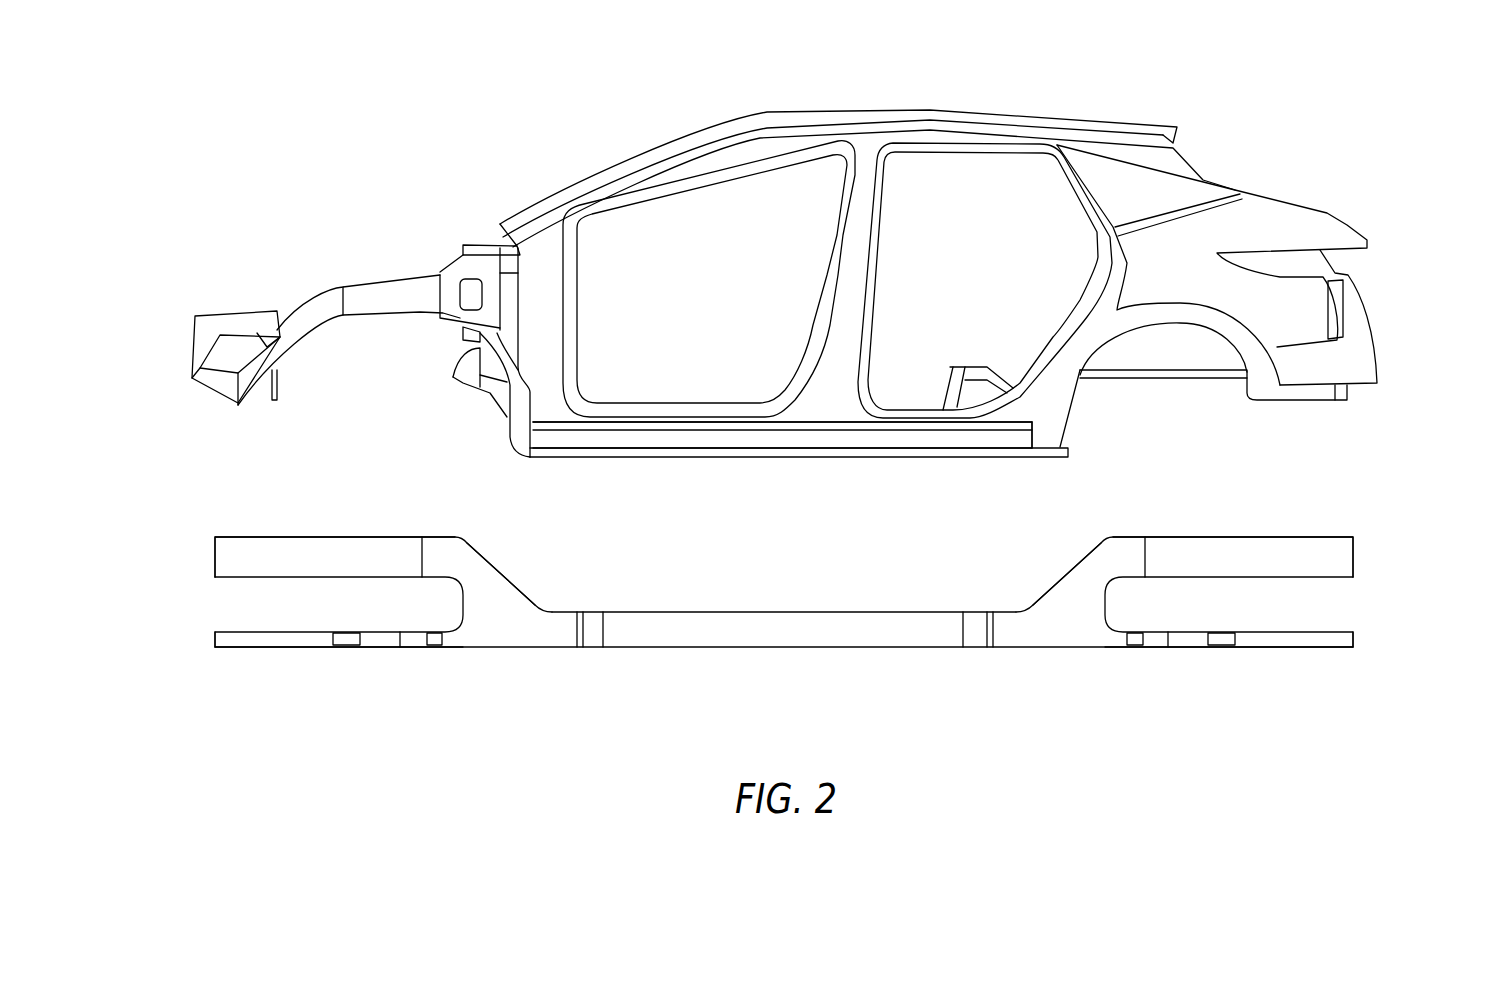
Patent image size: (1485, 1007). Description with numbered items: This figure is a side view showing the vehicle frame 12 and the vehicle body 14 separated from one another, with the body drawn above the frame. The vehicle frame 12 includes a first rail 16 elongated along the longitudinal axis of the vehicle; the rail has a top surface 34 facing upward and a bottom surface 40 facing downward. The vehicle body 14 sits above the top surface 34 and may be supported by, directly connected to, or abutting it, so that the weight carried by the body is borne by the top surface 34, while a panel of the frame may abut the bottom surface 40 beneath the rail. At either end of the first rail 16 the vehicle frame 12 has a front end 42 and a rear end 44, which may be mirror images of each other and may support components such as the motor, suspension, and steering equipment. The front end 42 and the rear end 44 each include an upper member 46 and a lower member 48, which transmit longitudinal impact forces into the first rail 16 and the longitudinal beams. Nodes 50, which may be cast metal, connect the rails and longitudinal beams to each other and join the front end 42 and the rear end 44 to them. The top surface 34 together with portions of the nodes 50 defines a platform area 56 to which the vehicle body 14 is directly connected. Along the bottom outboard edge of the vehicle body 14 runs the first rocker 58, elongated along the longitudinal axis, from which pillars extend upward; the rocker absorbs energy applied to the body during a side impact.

The vehicle frame 12 is at (1058, 713).
The vehicle body 14 is at (383, 140).
The first rail 16 is at (710, 640).
The top surface 34 is at (855, 610).
The bottom surface 40 is at (890, 650).
The front end 42 is at (179, 588).
The rear end 44 is at (1392, 588).
The upper member 46 is at (250, 535).
The lower member 48 is at (250, 650).
The node 50 is at (520, 650).
The platform area 56 is at (625, 572).
The first rocker 58 is at (800, 440).